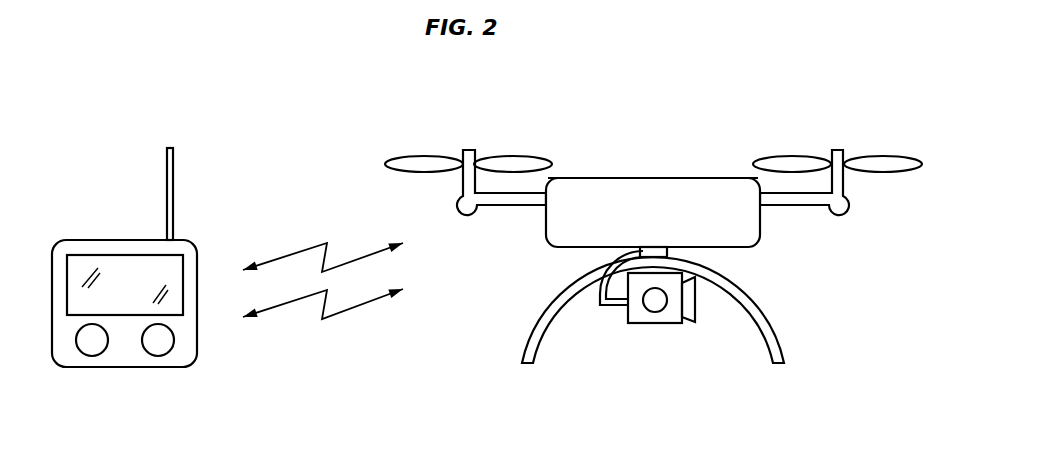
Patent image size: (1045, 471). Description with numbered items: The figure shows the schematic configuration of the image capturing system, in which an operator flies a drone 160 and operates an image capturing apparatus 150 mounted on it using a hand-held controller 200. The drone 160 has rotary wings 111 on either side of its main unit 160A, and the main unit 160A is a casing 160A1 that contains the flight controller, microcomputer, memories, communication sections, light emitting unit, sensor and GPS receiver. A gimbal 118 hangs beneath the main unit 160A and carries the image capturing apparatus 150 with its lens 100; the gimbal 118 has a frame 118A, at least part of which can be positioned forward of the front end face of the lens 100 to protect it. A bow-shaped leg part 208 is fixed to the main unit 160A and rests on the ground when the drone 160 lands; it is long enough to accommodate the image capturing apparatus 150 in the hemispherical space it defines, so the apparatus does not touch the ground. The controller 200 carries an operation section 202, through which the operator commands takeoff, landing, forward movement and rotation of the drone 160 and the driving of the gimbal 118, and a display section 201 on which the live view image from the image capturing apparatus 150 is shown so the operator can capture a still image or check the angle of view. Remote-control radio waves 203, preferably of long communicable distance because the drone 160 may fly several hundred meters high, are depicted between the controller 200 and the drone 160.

The lens 100 is at (696, 331).
The rotary wings 111 is at (422, 155).
The gimbal 118 is at (606, 339).
The frame 118A is at (598, 292).
The image capturing apparatus 150 is at (655, 323).
The drone 160 is at (653, 259).
The main unit 160A is at (661, 197).
The casing 160A1 is at (585, 178).
The controller 200 is at (125, 367).
The display section 201 is at (125, 268).
The operation section 202 is at (168, 340).
The remote-control radio waves 203 is at (290, 250).
The leg part 208 is at (530, 318).